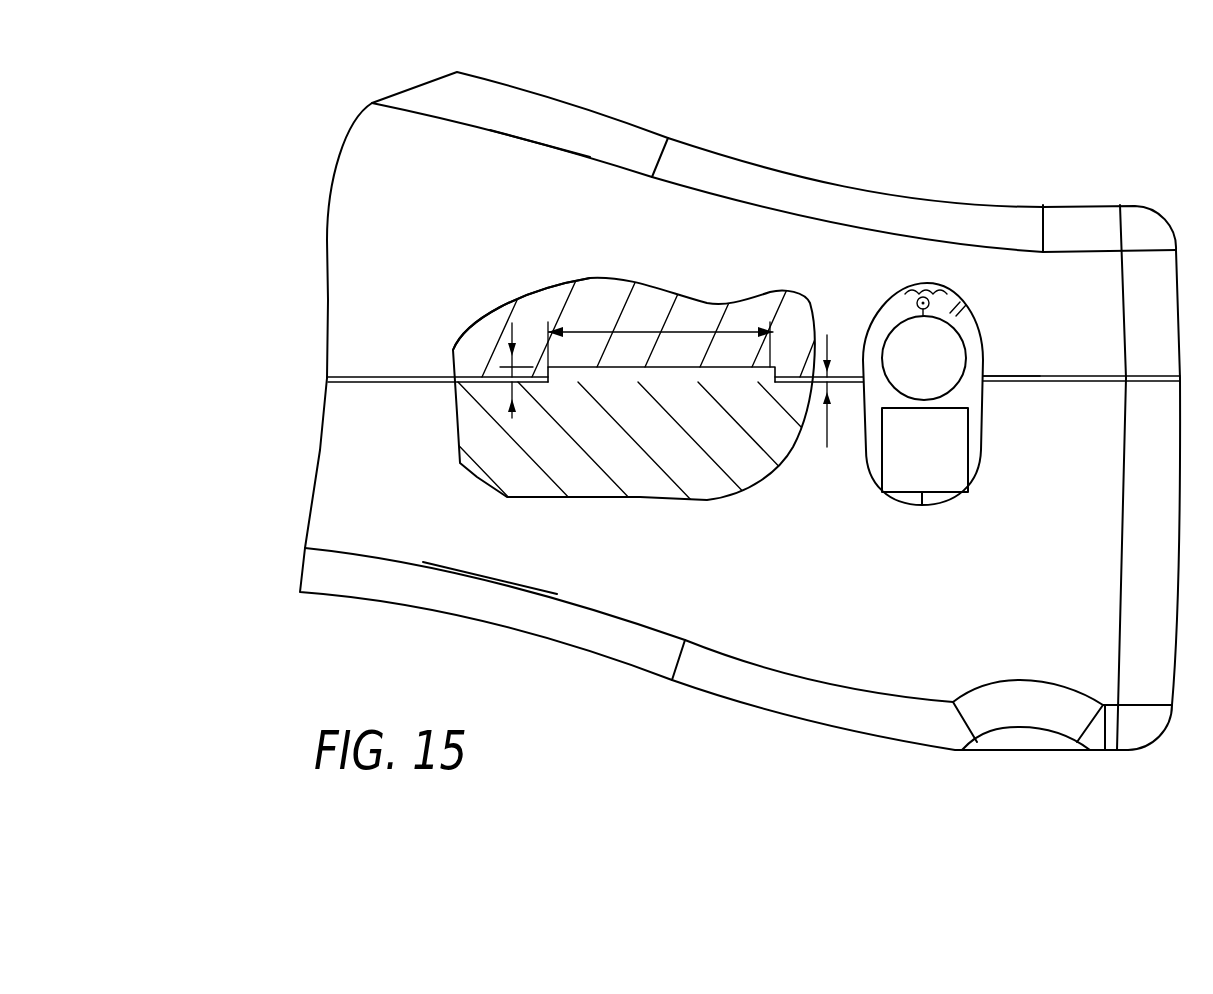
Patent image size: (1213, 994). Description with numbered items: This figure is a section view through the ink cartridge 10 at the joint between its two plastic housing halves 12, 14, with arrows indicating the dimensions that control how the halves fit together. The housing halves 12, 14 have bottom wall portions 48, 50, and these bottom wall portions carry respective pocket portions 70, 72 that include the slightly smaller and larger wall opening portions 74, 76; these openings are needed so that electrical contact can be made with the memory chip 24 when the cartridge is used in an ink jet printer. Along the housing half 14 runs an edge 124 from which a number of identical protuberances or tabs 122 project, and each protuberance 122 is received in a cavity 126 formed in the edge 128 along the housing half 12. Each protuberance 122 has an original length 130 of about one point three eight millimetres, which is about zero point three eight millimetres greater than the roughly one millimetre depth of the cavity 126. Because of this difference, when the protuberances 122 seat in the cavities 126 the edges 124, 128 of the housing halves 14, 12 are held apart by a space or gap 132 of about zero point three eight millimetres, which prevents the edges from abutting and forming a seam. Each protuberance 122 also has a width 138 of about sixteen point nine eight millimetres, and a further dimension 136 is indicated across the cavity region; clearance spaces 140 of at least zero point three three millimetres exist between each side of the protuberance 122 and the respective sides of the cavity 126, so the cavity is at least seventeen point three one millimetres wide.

The cartridge 10 is at (262, 118).
The housing half 12 is at (360, 246).
The housing half 14 is at (340, 468).
The memory chip 24 is at (977, 390).
The bottom wall portion 48 is at (418, 182).
The bottom wall portion 50 is at (428, 543).
The pocket portion 70 is at (975, 335).
The pocket portion 72 is at (973, 433).
The wall opening portion 74 is at (892, 306).
The wall opening portion 76 is at (872, 435).
The protuberance 122 is at (641, 375).
The edge 124 is at (380, 384).
The cavity 126 is at (568, 368).
The edge 128 is at (396, 375).
The original length 130 is at (510, 330).
The space or gap 132 is at (430, 386).
The groove width 136 is at (668, 334).
The width 138 is at (705, 330).
The clearance space 140 is at (535, 360).